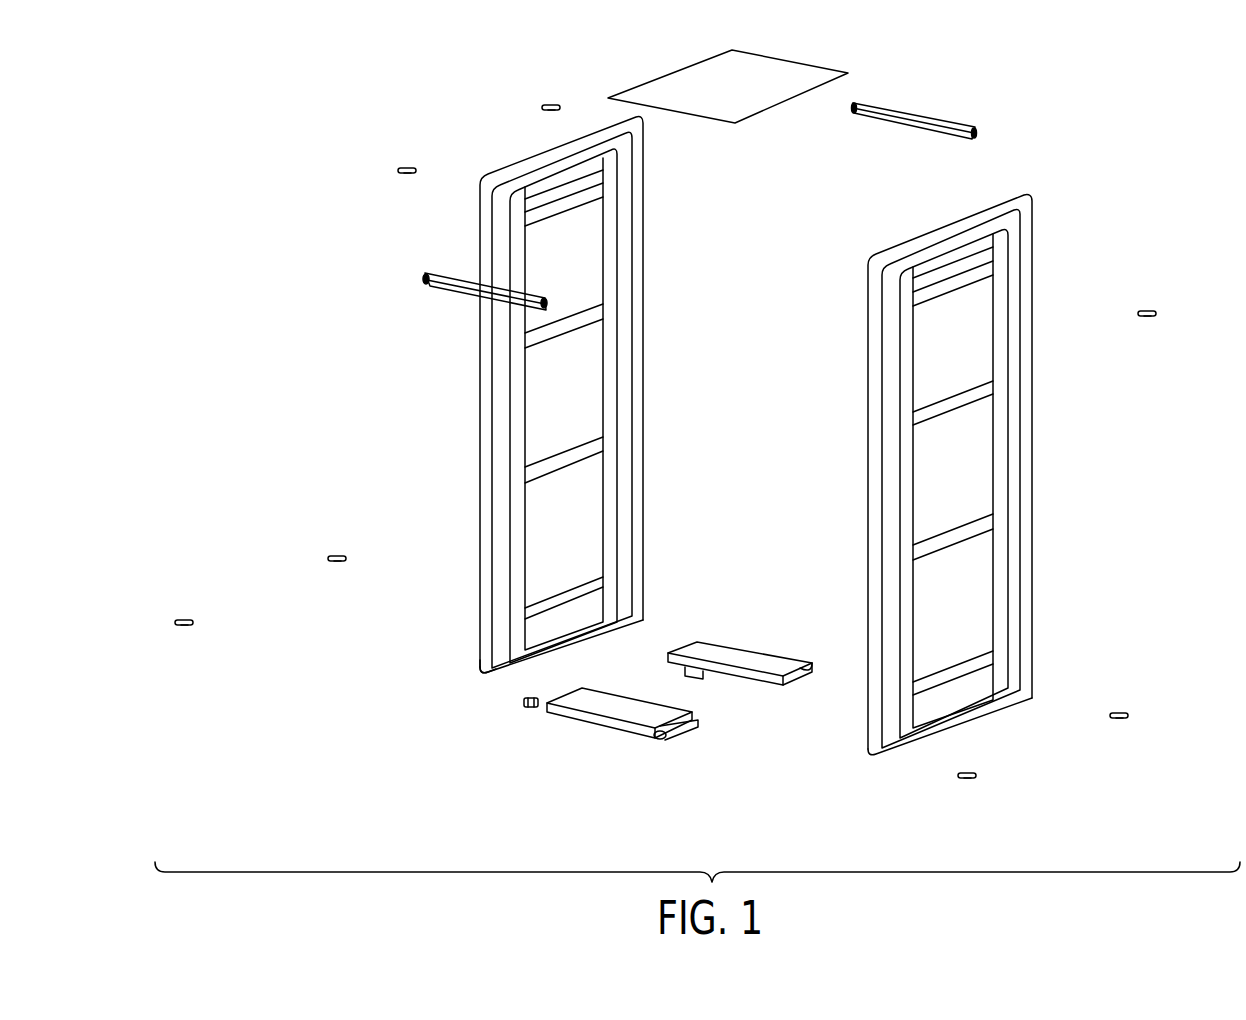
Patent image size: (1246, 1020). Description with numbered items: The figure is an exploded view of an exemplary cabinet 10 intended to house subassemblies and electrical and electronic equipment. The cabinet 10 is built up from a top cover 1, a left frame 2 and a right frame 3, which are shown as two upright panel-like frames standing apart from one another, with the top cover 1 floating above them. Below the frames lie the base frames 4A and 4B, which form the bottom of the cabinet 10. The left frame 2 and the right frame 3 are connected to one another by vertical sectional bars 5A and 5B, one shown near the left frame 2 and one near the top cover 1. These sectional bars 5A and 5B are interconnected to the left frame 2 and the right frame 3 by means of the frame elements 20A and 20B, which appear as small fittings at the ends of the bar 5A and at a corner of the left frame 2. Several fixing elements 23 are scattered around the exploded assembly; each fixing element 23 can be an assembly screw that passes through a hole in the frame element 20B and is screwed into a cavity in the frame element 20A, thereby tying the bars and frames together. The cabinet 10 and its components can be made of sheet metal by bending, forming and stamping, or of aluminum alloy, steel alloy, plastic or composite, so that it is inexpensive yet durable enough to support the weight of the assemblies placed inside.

The top cover 1 is at (795, 78).
The left frame 2 is at (479, 451).
The right frame 3 is at (1032, 430).
The base frame 4A is at (616, 723).
The base frame 4B is at (752, 674).
The vertical sectional bar 5A is at (457, 292).
The vertical sectional bar 5B is at (912, 113).
The cabinet 10 is at (1060, 152).
The frame element 20A is at (423, 279).
The frame element 20B is at (483, 680).
The fixing element 23 is at (553, 103).